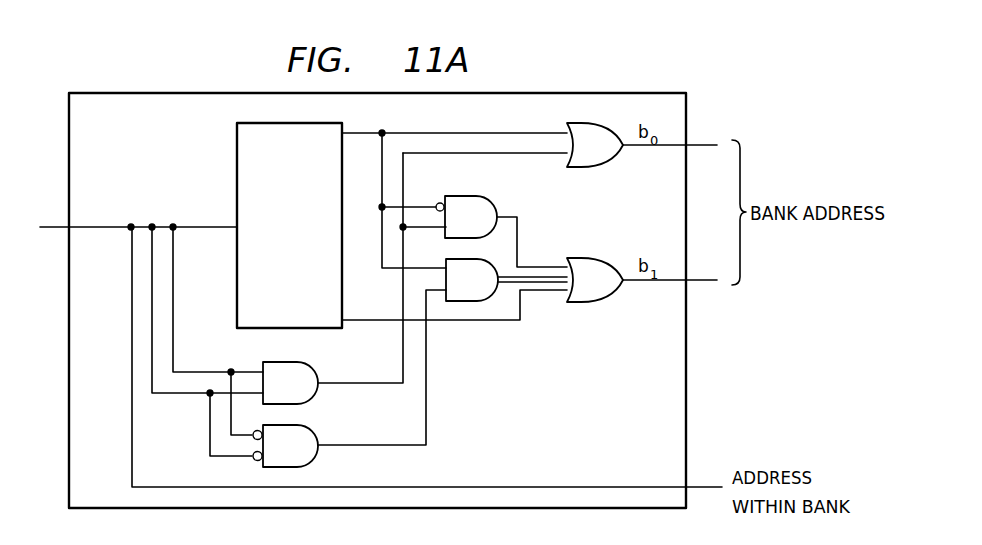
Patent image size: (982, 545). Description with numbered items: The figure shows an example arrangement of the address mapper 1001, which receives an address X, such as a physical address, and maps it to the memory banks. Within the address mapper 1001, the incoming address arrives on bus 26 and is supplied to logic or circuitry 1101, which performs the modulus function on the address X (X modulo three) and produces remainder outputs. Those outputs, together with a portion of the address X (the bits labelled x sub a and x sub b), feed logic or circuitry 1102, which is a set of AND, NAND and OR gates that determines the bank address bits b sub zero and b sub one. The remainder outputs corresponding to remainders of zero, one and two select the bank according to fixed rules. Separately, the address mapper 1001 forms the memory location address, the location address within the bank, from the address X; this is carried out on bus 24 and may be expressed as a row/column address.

The address mapper 1001 is at (686, 360).
The address input bus X 26 is at (117, 220).
The address within bank bus 24 is at (142, 351).
The logic or circuitry for performing the modulus function 1101 is at (315, 259).
The logic or circuitry for determining the bank address 1102 is at (535, 341).